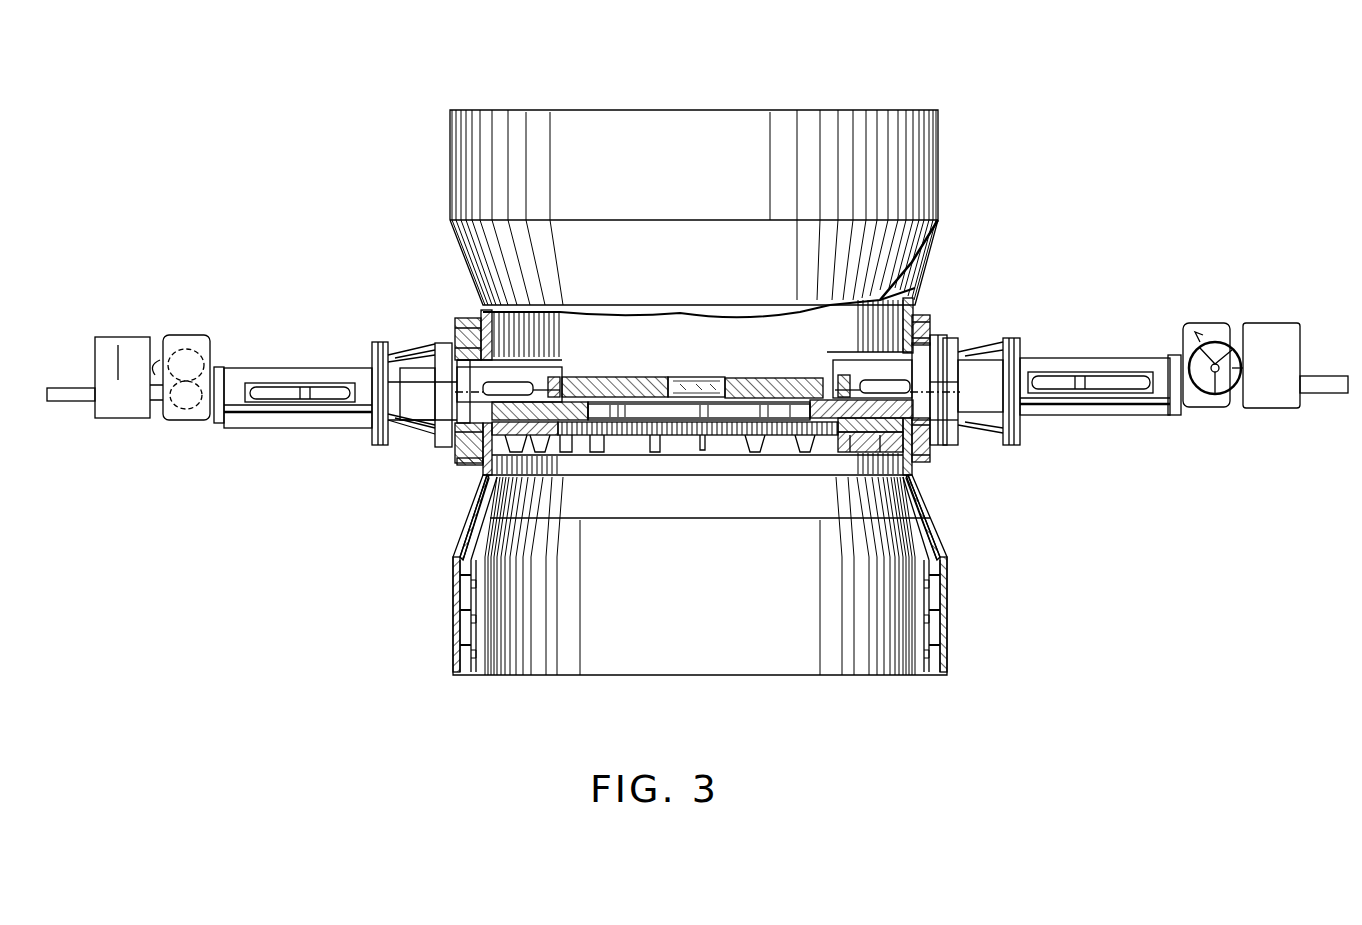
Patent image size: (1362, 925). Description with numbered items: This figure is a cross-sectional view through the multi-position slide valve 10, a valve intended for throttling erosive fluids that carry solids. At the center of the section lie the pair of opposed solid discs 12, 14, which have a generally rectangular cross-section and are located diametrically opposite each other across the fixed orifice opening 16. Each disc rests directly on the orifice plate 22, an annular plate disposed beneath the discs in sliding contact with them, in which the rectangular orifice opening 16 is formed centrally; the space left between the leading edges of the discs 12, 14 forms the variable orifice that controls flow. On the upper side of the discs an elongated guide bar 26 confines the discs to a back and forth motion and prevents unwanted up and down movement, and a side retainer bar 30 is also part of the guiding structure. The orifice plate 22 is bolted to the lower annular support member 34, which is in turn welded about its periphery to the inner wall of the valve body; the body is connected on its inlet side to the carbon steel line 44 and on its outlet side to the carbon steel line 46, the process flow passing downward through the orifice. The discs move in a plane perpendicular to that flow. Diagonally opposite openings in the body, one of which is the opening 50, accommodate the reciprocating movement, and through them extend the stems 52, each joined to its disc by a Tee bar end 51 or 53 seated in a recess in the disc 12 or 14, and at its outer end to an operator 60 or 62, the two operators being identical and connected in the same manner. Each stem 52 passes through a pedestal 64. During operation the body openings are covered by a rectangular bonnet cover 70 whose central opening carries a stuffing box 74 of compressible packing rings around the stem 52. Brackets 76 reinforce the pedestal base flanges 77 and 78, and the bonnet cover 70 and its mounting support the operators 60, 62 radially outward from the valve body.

The multi-position slide valve 10 is at (1034, 95).
The disc 12 is at (626, 376).
The disc 14 is at (780, 377).
The orifice opening 16 is at (695, 405).
The orifice plate 22 is at (812, 440).
The guide bar 26 is at (682, 376).
The side retainer bar 30 is at (705, 420).
The lower annular support member 34 is at (845, 453).
The carbon steel line 44 is at (450, 145).
The carbon steel line 46 is at (948, 606).
The opening 50 is at (482, 320).
The Tee bar end 51 is at (550, 380).
The stem 52 is at (460, 450).
The Tee bar end 53 is at (840, 378).
The operator 60 is at (176, 425).
The operator 62 is at (1210, 322).
The pedestal 64 is at (220, 366).
The bonnet cover 70 is at (945, 338).
The stuffing box 74 is at (418, 368).
The bracket 76 is at (430, 438).
The pedestal base flange 77 is at (392, 344).
The pedestal base flange 78 is at (375, 342).